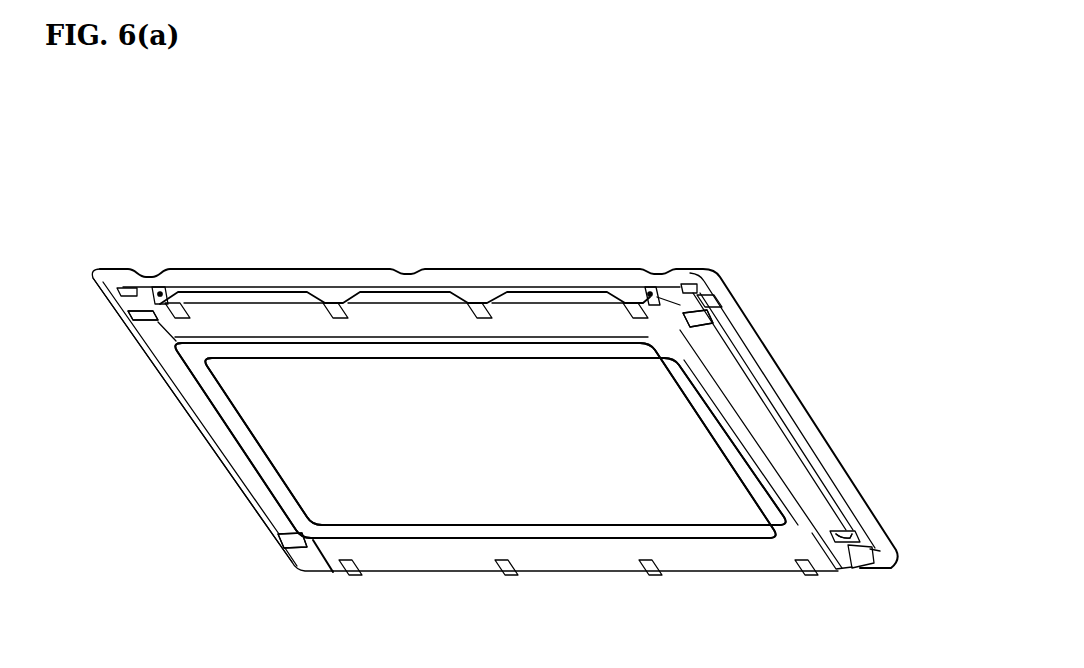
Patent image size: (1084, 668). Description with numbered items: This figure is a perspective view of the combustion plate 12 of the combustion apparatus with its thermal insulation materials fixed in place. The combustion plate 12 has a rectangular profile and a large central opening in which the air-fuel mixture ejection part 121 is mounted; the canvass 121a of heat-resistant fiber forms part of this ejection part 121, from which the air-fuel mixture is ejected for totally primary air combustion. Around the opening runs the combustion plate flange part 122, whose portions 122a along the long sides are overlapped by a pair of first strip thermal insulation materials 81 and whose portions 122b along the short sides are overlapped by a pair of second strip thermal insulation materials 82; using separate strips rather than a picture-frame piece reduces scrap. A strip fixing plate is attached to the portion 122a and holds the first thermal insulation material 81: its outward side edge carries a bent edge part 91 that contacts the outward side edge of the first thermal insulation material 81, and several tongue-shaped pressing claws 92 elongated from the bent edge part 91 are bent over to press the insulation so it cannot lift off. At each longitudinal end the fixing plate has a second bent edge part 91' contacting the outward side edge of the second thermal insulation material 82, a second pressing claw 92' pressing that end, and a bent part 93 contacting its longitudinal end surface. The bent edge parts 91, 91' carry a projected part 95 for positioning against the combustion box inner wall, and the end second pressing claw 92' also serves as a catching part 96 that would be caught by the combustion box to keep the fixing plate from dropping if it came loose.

The combustion plate 12 is at (781, 367).
The combustion plate flange part 122 is at (532, 278).
The flange portion along first opposite side 122a is at (475, 440).
The flange portion along second opposite side 122b is at (185, 410).
The air-fuel mixture ejection part 121 is at (607, 493).
The canvass 121a is at (495, 441).
The first strip thermal insulation material 81 is at (555, 318).
The second strip thermal insulation material 82 is at (168, 357).
The bent edge part 91 is at (405, 260).
The second bent edge part 91' is at (819, 410).
The pressing claw 92 is at (491, 475).
The second pressing claw 92' is at (494, 466).
The bent part 93 is at (121, 289).
The projected part 95 is at (160, 293).
The catching part 96 is at (490, 429).